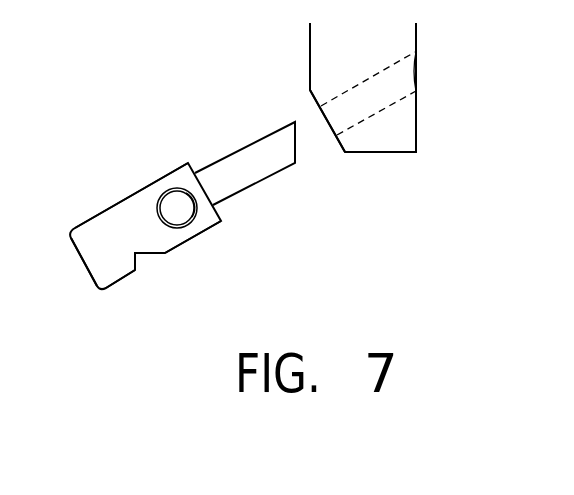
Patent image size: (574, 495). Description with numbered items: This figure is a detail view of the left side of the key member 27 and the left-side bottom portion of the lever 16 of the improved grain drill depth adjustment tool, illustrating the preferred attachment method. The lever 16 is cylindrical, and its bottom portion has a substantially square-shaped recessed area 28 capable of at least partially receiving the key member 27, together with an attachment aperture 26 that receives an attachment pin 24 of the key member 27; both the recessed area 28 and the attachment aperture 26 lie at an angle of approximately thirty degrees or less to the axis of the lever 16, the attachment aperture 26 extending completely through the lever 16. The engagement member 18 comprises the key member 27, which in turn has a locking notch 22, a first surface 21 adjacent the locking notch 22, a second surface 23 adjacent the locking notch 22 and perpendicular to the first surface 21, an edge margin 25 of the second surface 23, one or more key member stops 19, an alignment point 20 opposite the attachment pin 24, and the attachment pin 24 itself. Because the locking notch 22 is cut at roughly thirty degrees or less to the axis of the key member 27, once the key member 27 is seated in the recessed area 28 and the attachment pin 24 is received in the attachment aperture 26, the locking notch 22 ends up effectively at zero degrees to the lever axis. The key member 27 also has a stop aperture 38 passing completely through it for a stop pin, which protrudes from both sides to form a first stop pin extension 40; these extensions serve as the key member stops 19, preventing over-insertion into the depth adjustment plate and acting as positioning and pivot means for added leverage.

The lever 16 is at (390, 47).
The engagement member 18 is at (142, 176).
The key member stops 19 is at (164, 192).
The alignment point 20 is at (80, 257).
The first surface 21 is at (136, 257).
The locking notch 22 is at (140, 258).
The second surface 23 is at (138, 258).
The attachment pin 24 is at (248, 187).
The edge margin 25 is at (142, 258).
The attachment aperture 26 is at (375, 106).
The key member 27 is at (108, 233).
The substantially square-shaped recessed area 28 is at (315, 100).
The stop aperture 38 is at (184, 188).
The first stop pin extension 40 is at (182, 218).